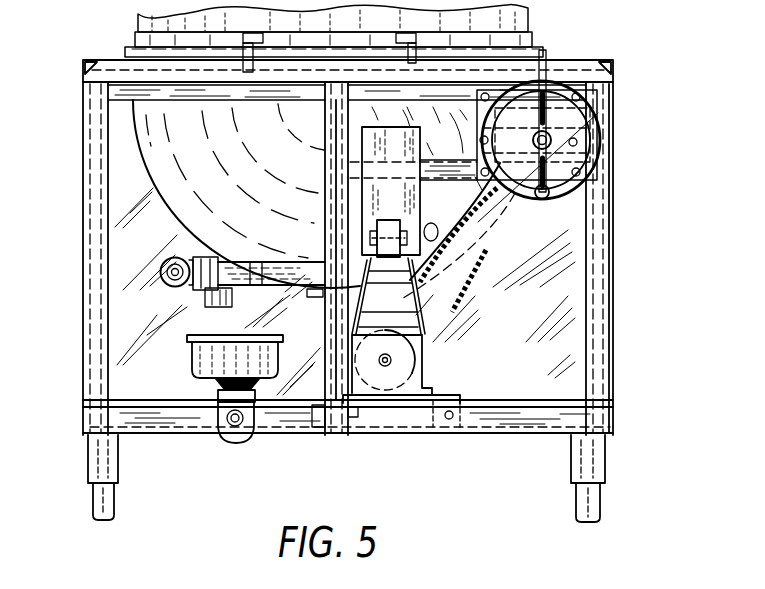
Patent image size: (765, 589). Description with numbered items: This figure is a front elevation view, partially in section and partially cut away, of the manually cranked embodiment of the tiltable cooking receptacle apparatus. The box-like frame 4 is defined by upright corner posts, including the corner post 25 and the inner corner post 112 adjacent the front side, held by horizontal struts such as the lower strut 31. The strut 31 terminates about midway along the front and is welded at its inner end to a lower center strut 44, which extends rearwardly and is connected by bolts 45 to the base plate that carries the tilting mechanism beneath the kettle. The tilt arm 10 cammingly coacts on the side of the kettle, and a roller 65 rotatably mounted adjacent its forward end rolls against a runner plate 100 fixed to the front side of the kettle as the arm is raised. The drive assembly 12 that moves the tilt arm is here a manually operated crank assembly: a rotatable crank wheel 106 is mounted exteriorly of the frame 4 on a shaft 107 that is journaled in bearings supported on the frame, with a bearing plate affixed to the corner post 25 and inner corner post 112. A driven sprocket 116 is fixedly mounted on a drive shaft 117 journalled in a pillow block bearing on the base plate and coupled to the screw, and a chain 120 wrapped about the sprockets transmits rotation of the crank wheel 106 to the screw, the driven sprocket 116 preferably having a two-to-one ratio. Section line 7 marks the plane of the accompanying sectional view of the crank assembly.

The frame 4 is at (609, 59).
The section line 7- 7 is at (95, 70).
The tilt arm 10 is at (358, 285).
The drive assembly 12 is at (415, 377).
The corner post 25 is at (606, 285).
The lower strut 31 is at (524, 410).
The lower center strut 44 is at (333, 431).
The bolts 45 is at (315, 431).
The roller 65 is at (385, 228).
The runner plate 100 is at (382, 187).
The crank wheel 106 is at (578, 188).
The shaft 107 is at (556, 128).
The inner corner post 112 is at (330, 128).
The driven sprocket 116 is at (396, 372).
The drive shaft 117 is at (386, 367).
The chain 120 is at (458, 283).